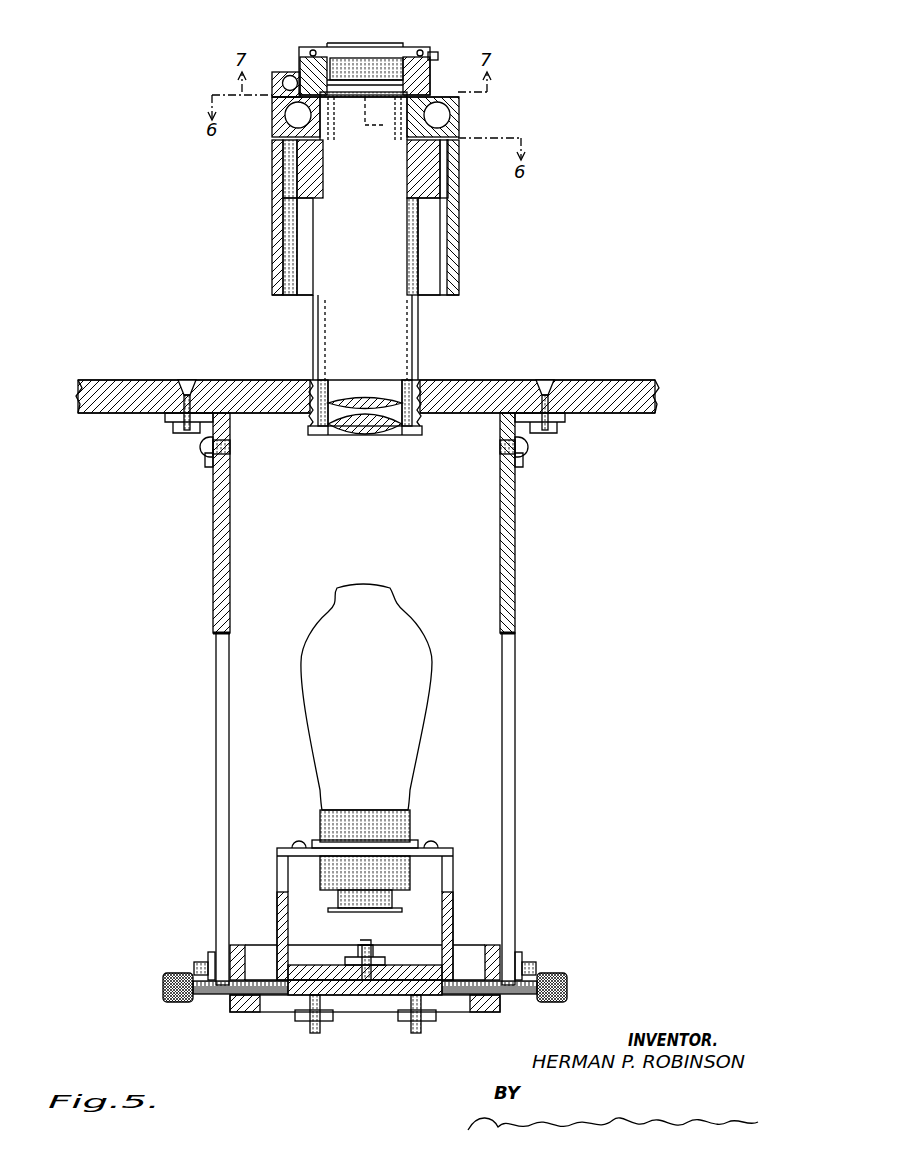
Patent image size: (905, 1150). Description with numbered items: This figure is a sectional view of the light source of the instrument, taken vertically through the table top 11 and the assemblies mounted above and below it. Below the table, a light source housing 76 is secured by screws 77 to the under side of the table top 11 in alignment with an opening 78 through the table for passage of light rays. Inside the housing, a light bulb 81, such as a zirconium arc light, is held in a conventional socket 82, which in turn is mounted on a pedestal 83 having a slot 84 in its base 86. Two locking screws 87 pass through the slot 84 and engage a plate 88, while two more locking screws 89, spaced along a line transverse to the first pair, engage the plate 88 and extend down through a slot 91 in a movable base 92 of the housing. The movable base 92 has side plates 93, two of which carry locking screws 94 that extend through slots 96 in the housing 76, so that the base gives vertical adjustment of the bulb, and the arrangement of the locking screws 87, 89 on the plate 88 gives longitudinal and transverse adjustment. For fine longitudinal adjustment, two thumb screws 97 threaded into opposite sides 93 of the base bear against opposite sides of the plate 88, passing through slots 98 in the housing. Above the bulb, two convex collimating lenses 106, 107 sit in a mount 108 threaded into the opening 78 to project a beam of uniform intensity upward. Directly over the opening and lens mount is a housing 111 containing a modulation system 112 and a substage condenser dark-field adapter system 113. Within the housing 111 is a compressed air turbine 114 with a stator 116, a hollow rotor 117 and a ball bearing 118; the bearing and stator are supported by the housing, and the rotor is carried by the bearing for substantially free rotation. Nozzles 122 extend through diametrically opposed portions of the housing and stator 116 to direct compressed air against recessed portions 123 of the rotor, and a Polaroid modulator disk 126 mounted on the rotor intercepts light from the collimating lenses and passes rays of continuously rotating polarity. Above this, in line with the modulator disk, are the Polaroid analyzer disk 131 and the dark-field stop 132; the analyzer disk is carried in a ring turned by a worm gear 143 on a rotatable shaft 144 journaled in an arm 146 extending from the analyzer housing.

The table top 11 is at (78, 406).
The light source housing 76 is at (515, 612).
The screws 77 is at (200, 447).
The opening 78 is at (318, 388).
The light bulb 81 is at (324, 622).
The socket 82 is at (320, 826).
The pedestal 83 is at (450, 866).
The slot 84 is at (356, 977).
The base 86 is at (427, 965).
The locking screws 87 is at (358, 948).
The plate 88 is at (388, 992).
The locking screws 89 is at (300, 1020).
The slot 91 is at (468, 1005).
The movable base 92 is at (243, 1005).
The side plates 93 is at (270, 946).
The locking screws 94 is at (209, 956).
The slots 96 is at (220, 921).
The thumb screws 97 is at (160, 986).
The slots 98 is at (219, 688).
The convex collimating lens 106 is at (378, 440).
The convex collimating lens 107 is at (386, 398).
The lens mount 108 is at (310, 432).
The housing 111 is at (455, 253).
The modulation system 112 is at (355, 190).
The substage condenser dark-field adapter system 113 is at (393, 31).
The compressed air turbine 114 is at (383, 192).
The stator 116 is at (445, 183).
The hollow rotor 117 is at (316, 200).
The ball bearing 118 is at (447, 112).
The nozzles 122 is at (300, 165).
The recessed portions 123 is at (297, 172).
The Polaroid modulator disk 126 is at (362, 97).
The Polaroid analyzer disk 131 is at (377, 97).
The dark-field stop 132 is at (363, 47).
The worm gear 143 is at (280, 98).
The rotatable shaft 144 is at (284, 77).
The arm 146 is at (291, 74).